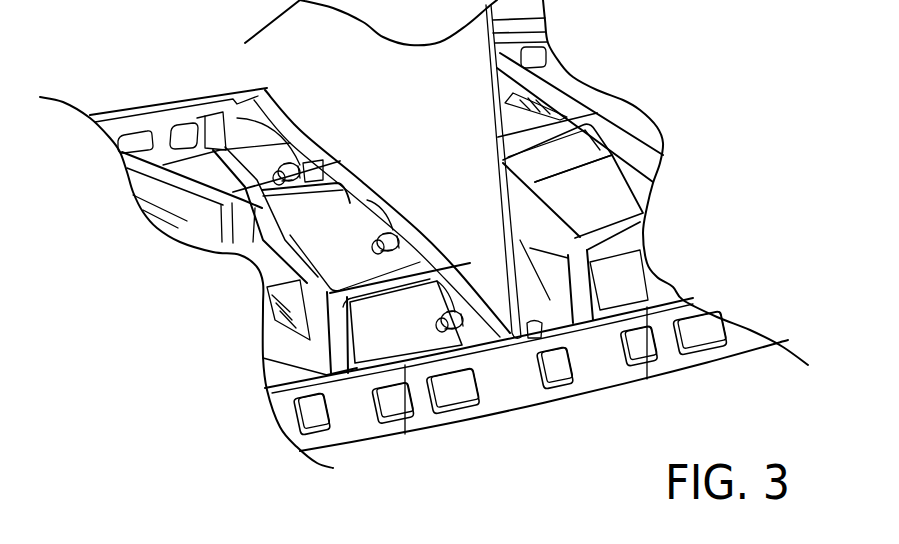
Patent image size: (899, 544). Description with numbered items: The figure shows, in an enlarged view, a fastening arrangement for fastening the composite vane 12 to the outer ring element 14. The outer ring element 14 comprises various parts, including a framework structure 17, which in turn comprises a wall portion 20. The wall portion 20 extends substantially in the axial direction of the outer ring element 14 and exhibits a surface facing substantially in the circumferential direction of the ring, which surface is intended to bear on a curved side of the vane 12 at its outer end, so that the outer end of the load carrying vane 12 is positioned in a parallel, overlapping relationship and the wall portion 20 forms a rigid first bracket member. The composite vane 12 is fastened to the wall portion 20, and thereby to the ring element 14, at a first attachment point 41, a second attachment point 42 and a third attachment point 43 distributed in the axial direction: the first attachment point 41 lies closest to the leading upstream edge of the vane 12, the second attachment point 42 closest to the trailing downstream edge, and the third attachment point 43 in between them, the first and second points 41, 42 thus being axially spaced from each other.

The composite vane 12 is at (443, 150).
The outer ring element 14 is at (458, 444).
The framework structure 17 is at (633, 403).
The wall portion 20 is at (483, 345).
The first attachment point 41 is at (273, 180).
The second attachment point 42 is at (457, 322).
The third attachment point 43 is at (377, 240).